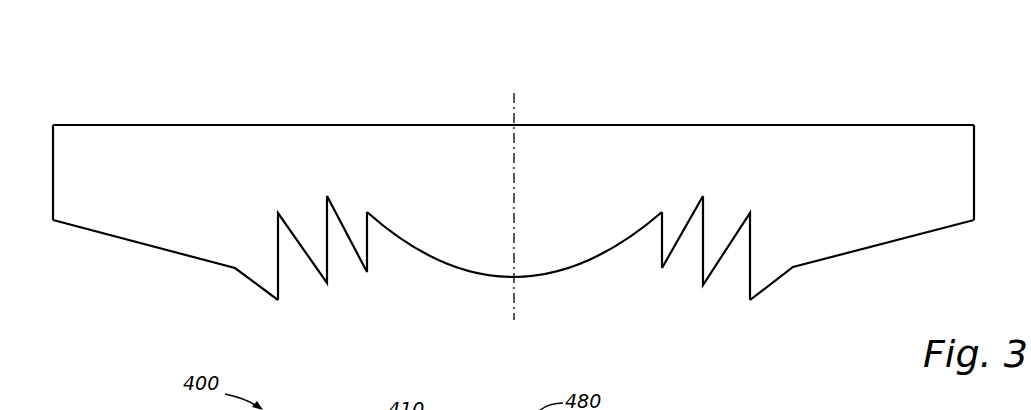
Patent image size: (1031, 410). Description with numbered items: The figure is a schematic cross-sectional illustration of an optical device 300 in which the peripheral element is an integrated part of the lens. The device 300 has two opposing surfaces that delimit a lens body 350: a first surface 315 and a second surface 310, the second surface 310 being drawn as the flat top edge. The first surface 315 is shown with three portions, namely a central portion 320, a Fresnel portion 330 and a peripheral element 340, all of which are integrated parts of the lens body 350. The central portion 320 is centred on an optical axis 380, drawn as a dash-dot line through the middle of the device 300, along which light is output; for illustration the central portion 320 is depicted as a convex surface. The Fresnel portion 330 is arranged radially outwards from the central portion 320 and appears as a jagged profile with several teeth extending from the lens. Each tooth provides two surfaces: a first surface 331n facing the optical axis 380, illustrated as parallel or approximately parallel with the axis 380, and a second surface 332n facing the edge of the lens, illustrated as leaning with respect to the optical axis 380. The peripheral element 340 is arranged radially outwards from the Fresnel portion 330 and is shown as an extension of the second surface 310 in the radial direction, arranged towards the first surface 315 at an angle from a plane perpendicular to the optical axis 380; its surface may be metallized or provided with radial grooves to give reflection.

The optical device 300 is at (258, 72).
The second surface 310 is at (353, 123).
The first surface 315 is at (258, 290).
The central portion 320 is at (500, 280).
The Fresnel portion 330 is at (724, 291).
The first surface of a tooth 331n is at (660, 257).
The second surface of a tooth 332n is at (663, 257).
The peripheral element 340 is at (852, 253).
The lens body 350 is at (900, 135).
The optical axis 380 is at (515, 107).